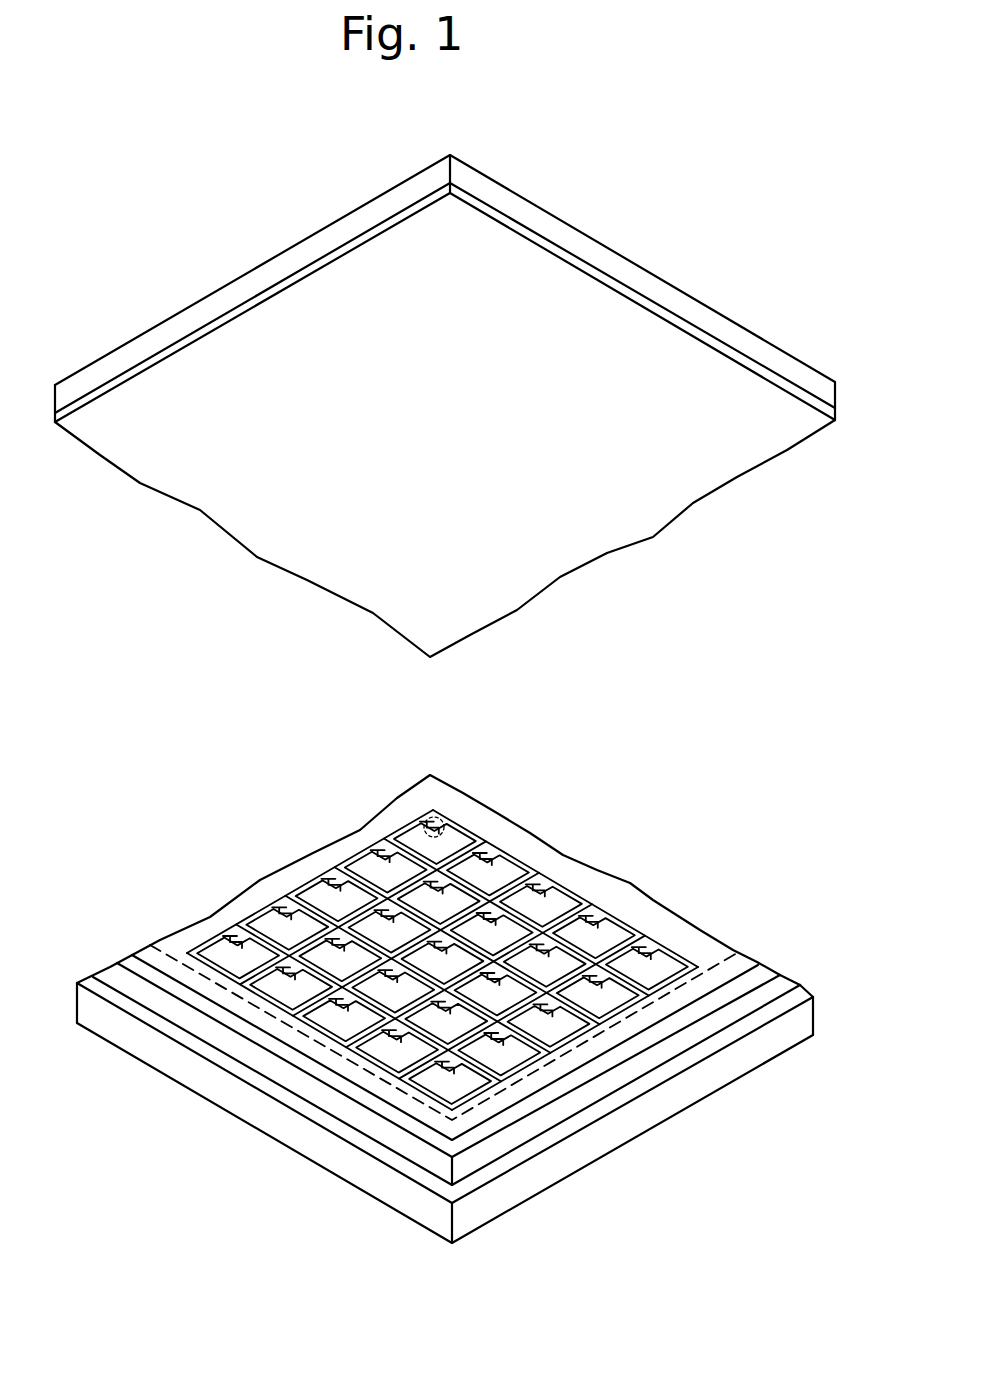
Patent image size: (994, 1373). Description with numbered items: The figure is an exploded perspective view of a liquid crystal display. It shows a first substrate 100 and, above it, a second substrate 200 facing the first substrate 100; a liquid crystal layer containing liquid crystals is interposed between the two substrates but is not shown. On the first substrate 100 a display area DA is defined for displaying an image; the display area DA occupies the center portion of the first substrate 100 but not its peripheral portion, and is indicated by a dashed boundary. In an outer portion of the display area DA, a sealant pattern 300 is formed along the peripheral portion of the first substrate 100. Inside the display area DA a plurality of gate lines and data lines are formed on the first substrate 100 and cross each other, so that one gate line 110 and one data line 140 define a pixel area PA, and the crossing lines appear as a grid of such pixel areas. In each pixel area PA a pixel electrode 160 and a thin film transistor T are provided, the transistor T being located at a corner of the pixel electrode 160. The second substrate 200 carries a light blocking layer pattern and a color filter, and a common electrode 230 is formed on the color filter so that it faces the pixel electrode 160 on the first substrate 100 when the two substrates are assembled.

The first substrate 100 is at (270, 1122).
The gate line 110 is at (267, 890).
The data line 140 is at (250, 913).
The pixel electrode 160 is at (217, 957).
The second substrate 200 is at (283, 267).
The common electrode 230 is at (595, 537).
The sealant pattern 300 is at (505, 1120).
The thin film transistor T is at (437, 815).
The pixel area PA is at (557, 893).
The display area DA is at (715, 962).